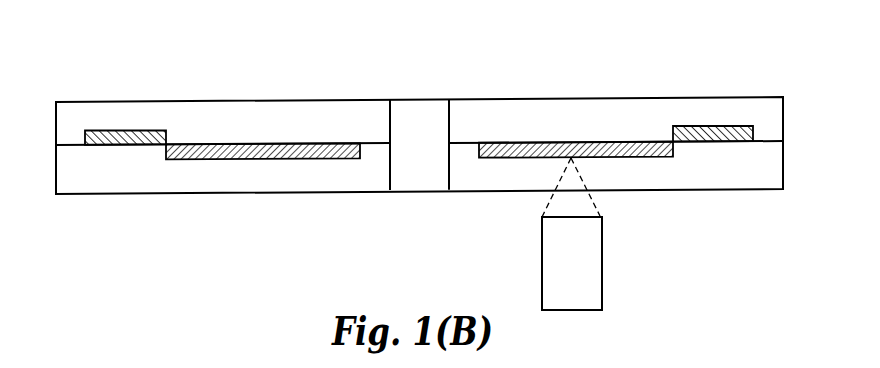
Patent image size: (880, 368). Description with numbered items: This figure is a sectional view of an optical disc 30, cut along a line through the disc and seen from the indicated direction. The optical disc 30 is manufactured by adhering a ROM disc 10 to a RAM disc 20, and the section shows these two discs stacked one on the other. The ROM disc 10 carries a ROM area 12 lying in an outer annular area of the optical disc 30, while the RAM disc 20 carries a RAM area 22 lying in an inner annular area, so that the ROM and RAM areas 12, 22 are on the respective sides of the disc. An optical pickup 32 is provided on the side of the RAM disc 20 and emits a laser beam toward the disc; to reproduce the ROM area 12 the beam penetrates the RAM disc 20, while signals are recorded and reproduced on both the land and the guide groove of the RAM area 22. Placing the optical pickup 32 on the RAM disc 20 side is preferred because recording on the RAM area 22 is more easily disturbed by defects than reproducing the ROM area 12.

The ROM disc 10 is at (797, 107).
The ROM area 12 is at (120, 131).
The RAM disc 20 is at (718, 191).
The RAM area 22 is at (228, 161).
The optical disc 30 is at (243, 50).
The optical pickup 32 is at (602, 296).